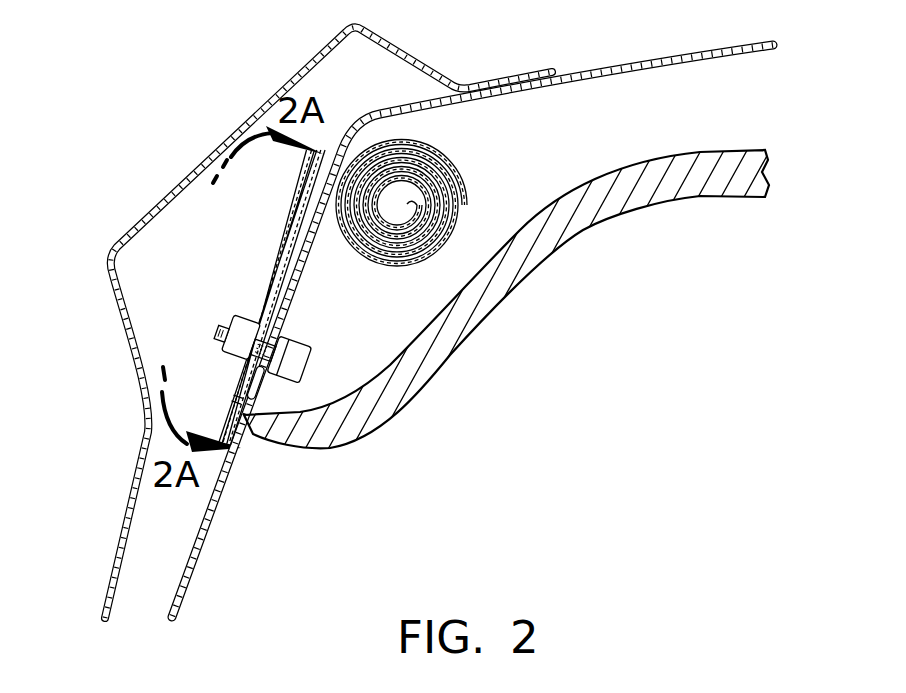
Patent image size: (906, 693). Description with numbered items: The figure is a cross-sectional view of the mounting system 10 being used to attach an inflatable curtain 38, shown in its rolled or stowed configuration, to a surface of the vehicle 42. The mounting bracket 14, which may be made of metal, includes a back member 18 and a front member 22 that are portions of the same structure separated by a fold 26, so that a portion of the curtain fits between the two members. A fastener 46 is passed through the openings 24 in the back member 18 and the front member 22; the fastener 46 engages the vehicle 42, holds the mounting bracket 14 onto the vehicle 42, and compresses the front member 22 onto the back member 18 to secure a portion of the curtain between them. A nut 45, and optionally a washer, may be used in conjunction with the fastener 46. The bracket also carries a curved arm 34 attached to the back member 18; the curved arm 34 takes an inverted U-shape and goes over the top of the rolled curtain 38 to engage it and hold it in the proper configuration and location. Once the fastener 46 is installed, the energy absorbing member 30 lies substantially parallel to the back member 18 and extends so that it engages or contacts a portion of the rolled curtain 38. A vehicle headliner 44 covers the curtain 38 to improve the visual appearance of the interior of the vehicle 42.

The mounting system 10 is at (270, 278).
The mounting bracket 14 is at (318, 187).
The back member 18 is at (242, 383).
The front member 22 is at (257, 384).
The openings 24 is at (258, 325).
The fold 26 is at (232, 410).
The energy absorbing member 30 is at (312, 248).
The curved arm 34 is at (466, 214).
The inflatable curtain 38 is at (400, 140).
The vehicle 42 is at (296, 236).
The vehicle headliner 44 is at (437, 354).
The nut 45 is at (240, 340).
The fastener 46 is at (288, 358).